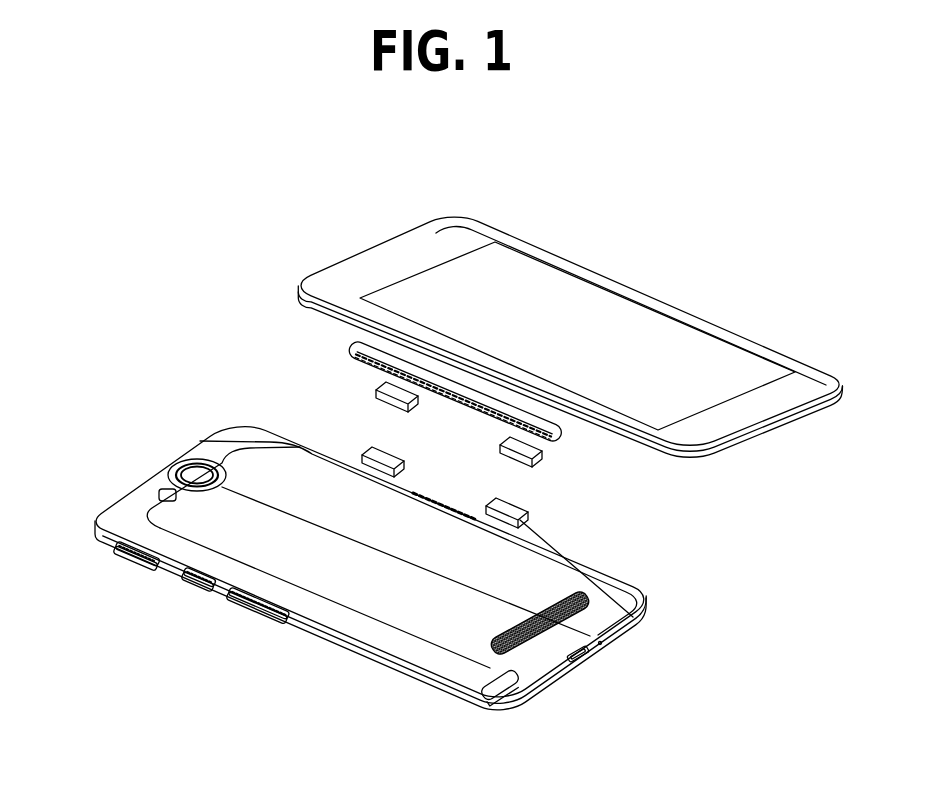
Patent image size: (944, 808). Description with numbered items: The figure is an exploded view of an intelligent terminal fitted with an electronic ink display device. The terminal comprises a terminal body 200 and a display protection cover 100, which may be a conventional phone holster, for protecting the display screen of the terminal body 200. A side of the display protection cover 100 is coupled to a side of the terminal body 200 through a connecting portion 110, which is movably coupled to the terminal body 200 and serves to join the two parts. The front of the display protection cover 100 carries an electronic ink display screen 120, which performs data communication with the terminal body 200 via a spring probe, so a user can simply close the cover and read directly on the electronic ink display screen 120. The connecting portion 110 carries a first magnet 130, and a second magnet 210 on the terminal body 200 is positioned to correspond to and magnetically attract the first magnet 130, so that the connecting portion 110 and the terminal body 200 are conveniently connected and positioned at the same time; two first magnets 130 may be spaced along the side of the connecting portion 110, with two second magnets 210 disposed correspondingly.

The display protection cover 100 is at (367, 272).
The connecting portion 110 is at (430, 358).
The electronic ink display screen 120 is at (507, 305).
The first magnet 130 is at (545, 460).
The terminal body 200 is at (157, 482).
The second magnet 210 is at (527, 522).